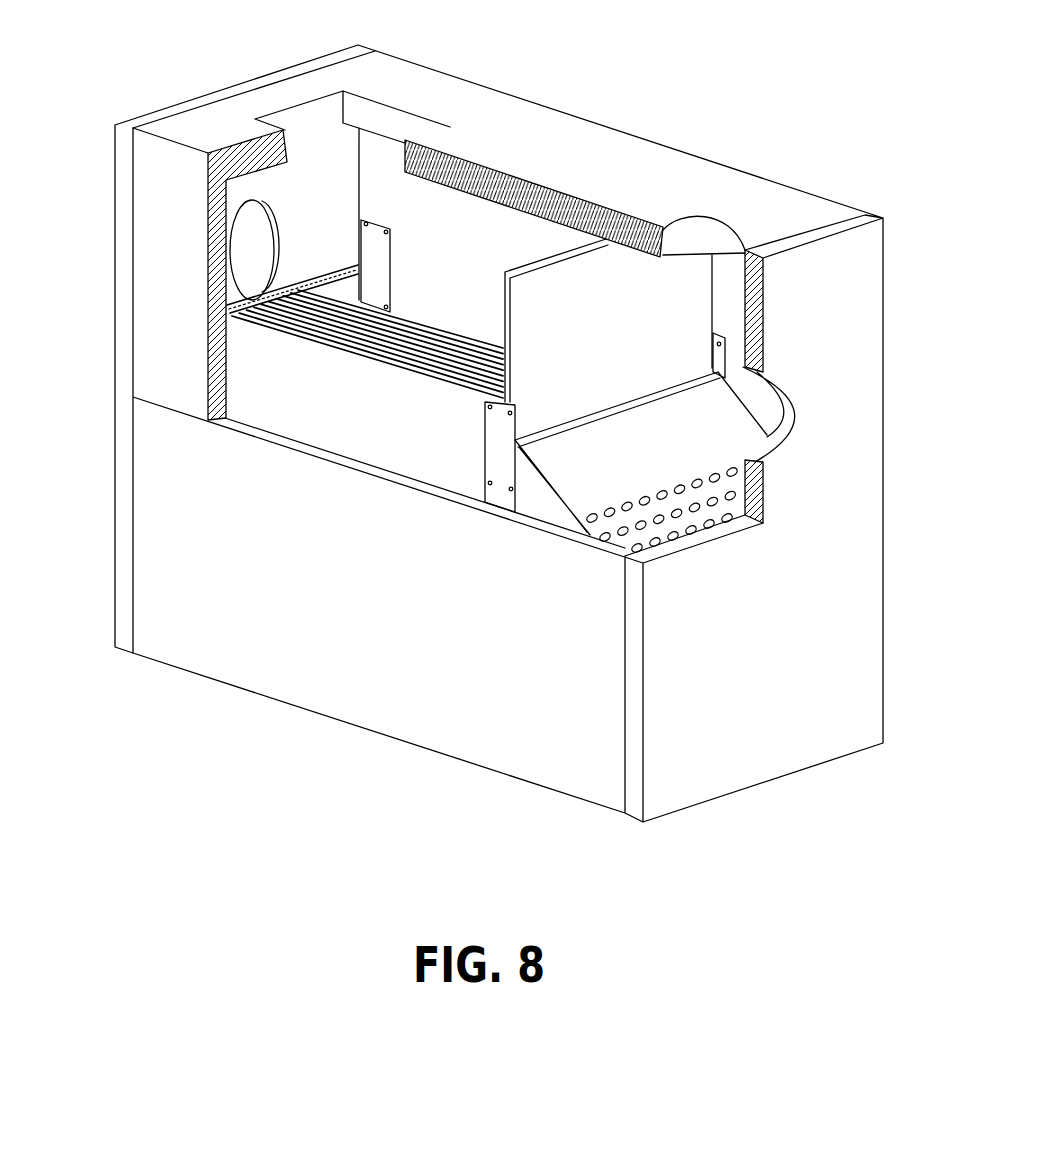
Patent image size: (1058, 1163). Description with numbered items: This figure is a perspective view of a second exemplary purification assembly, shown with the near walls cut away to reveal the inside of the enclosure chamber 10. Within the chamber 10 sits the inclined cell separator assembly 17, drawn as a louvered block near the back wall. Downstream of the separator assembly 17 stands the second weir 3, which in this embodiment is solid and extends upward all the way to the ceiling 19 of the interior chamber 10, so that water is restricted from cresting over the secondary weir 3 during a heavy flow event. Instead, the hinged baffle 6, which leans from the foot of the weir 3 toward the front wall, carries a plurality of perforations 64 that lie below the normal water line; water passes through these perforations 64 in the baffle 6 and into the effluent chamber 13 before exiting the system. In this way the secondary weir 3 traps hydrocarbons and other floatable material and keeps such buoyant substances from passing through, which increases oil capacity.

The enclosure chamber 10 is at (431, 222).
The ceiling 19 is at (530, 212).
The second weir 3 is at (636, 283).
The effluent chamber 13 is at (727, 300).
The separator assembly 17 is at (256, 373).
The baffle 6 is at (565, 460).
The perforations 64 is at (645, 522).